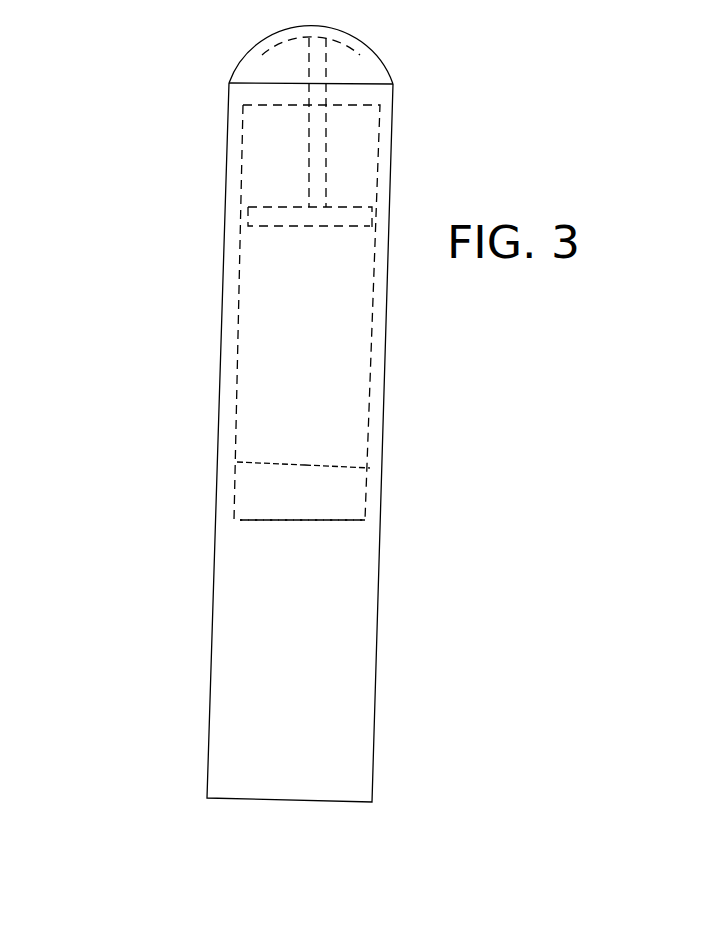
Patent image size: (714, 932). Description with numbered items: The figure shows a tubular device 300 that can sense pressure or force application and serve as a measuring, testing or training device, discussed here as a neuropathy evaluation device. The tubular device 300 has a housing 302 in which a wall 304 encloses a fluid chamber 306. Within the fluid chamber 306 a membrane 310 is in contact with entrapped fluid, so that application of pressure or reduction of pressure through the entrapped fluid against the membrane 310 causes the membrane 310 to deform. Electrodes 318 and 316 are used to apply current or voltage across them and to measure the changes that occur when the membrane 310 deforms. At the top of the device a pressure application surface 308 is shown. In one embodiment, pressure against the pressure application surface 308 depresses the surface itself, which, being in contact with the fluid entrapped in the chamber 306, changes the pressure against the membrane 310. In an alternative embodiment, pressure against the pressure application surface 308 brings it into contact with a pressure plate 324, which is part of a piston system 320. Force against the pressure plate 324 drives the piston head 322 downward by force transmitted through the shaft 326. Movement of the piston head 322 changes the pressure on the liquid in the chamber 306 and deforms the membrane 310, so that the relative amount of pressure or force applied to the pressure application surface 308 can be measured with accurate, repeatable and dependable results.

The tubular device 300 is at (441, 372).
The housing 302 is at (381, 558).
The wall 304 is at (370, 428).
The fluid chamber 306 is at (268, 338).
The pressure application surface 308 is at (374, 52).
The membrane 310 is at (290, 475).
The electrode 316 is at (238, 463).
The electrode 318 is at (365, 468).
The piston system 320 is at (333, 152).
The piston head 322 is at (275, 206).
The pressure plate 324 is at (263, 40).
The shaft 326 is at (308, 130).